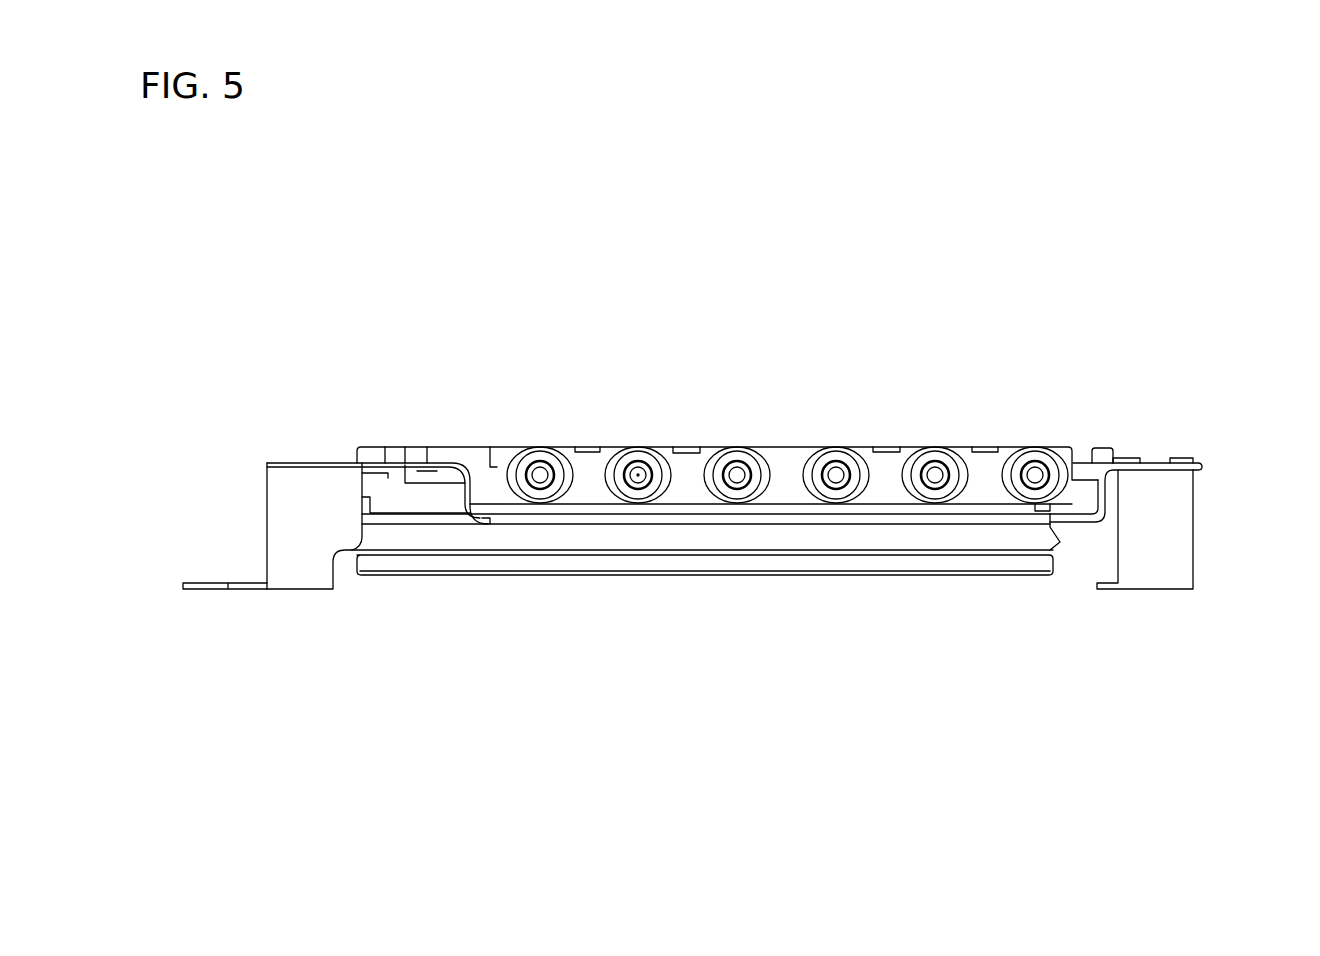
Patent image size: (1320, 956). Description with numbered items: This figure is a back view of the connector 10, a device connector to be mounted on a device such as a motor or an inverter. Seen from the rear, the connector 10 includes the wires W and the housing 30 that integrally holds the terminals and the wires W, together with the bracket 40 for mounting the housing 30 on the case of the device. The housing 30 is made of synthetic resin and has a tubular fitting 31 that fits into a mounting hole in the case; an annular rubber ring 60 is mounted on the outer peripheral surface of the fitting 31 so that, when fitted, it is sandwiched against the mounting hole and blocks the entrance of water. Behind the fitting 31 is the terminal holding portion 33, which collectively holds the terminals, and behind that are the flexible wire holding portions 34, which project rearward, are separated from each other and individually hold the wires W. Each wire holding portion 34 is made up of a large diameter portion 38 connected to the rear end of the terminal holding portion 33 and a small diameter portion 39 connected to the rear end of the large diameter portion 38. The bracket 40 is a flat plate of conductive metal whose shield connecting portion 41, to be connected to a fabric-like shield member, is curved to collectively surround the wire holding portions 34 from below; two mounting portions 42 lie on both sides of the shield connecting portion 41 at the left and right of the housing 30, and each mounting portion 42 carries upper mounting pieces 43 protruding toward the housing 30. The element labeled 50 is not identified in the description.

The connector 10 is at (680, 268).
The housing 30 is at (988, 440).
The fitting 31 is at (507, 562).
The terminal holding portion 33 is at (688, 465).
The wire holding portions 34 is at (758, 483).
The large diameter portion 38 is at (655, 498).
The small diameter portion 39 is at (657, 478).
The bracket 40 is at (1132, 455).
The shield connecting portion 41 is at (912, 520).
The mounting portions 42 is at (283, 508).
The upper mounting pieces 43 is at (1087, 463).
The shaft 50 is at (627, 468).
The rubber ring 60 is at (590, 535).
The wires W is at (638, 480).